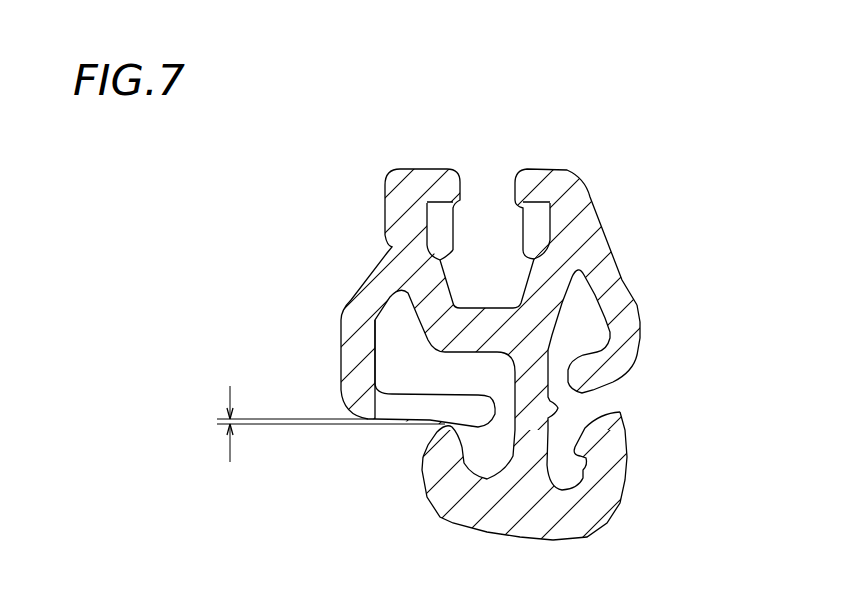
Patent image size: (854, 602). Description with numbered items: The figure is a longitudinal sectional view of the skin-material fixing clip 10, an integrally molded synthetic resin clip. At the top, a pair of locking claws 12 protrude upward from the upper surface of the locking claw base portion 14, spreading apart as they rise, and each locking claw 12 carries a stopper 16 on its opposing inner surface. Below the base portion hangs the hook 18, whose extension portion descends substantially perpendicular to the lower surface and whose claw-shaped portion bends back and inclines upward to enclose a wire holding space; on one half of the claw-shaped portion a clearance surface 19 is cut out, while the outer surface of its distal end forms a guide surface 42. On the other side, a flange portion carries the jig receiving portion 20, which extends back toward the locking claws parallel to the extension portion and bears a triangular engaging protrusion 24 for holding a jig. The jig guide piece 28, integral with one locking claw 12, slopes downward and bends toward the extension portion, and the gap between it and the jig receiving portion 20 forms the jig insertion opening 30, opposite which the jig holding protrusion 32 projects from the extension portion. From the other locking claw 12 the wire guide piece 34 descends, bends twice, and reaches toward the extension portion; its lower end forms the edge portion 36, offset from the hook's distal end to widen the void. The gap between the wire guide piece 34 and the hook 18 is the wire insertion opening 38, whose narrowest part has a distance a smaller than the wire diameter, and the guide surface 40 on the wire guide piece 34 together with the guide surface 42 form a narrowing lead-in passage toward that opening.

The skin-material fixing clip 10 is at (633, 165).
The locking claw 12 is at (405, 190).
The locking claw base portion 14 is at (493, 328).
The stopper 16 is at (437, 228).
The hook 18 is at (507, 520).
The clearance surface 19 is at (440, 448).
The jig receiving portion 20 is at (600, 503).
The engaging protrusion 24 is at (583, 457).
The jig guide piece 28 is at (607, 250).
The jig insertion opening 30 is at (620, 404).
The jig holding protrusion 32 is at (560, 410).
The wire guide piece 34 is at (355, 300).
The edge portion 36 is at (347, 398).
The wire insertion opening 38 is at (428, 428).
The guide surface 40 is at (428, 419).
The guide surface 42 is at (421, 438).
The distance a is at (289, 417).